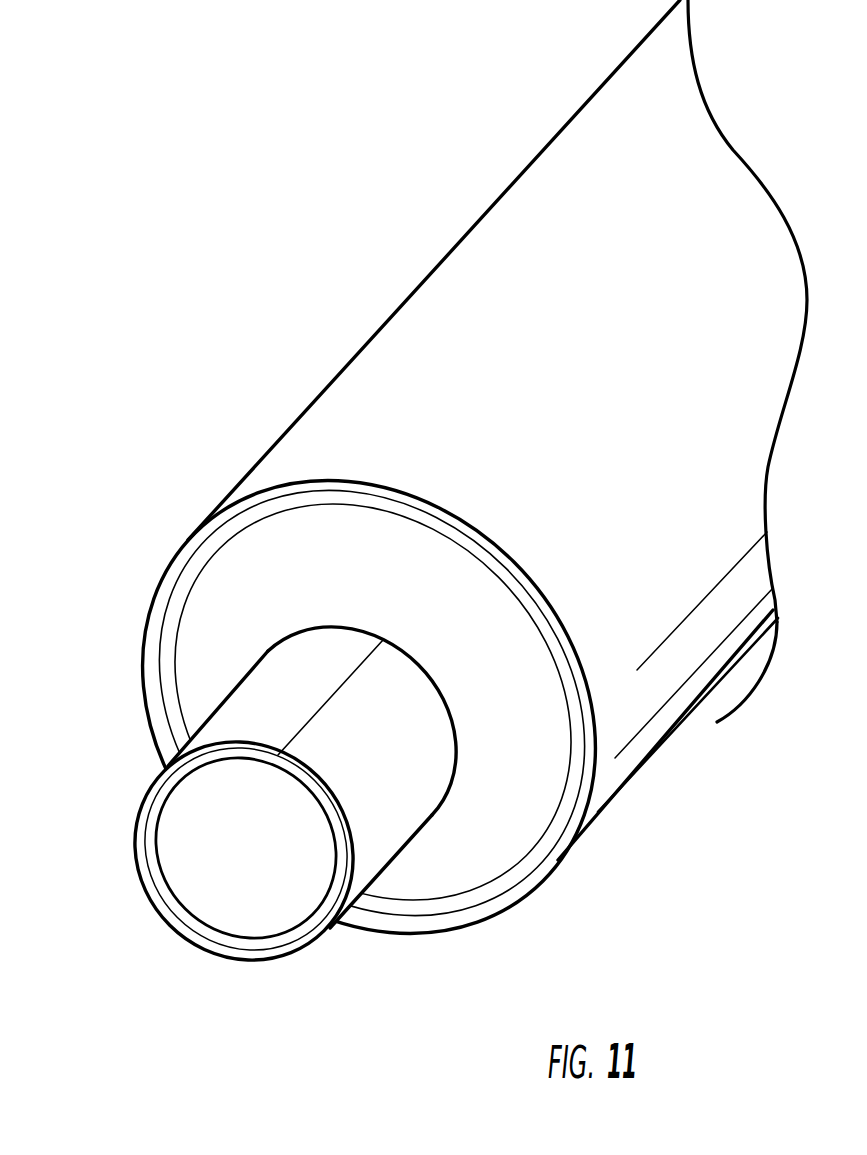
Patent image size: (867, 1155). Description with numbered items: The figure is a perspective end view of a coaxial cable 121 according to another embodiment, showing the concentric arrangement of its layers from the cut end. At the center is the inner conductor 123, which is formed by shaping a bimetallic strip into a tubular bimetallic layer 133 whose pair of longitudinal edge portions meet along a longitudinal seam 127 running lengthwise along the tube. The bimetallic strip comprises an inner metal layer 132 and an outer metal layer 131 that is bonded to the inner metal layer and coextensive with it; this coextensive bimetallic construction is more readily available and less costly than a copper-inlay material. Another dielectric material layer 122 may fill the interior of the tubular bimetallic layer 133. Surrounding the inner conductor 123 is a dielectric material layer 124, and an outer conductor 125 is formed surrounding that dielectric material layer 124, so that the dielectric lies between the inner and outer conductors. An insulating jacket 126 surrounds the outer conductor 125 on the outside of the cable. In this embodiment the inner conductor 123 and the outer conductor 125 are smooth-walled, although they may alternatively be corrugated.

The coaxial cable 121 is at (340, 348).
The dielectric material layer 122 is at (222, 833).
The inner conductor 123 is at (404, 814).
The dielectric material layer 124 is at (514, 802).
The outer conductor 125 is at (570, 794).
The insulating jacket 126 is at (592, 757).
The longitudinal seam 127 is at (320, 708).
The outer metal layer 131 is at (143, 808).
The inner metal layer 132 is at (147, 840).
The tubular bimetallic layer 133 is at (298, 953).